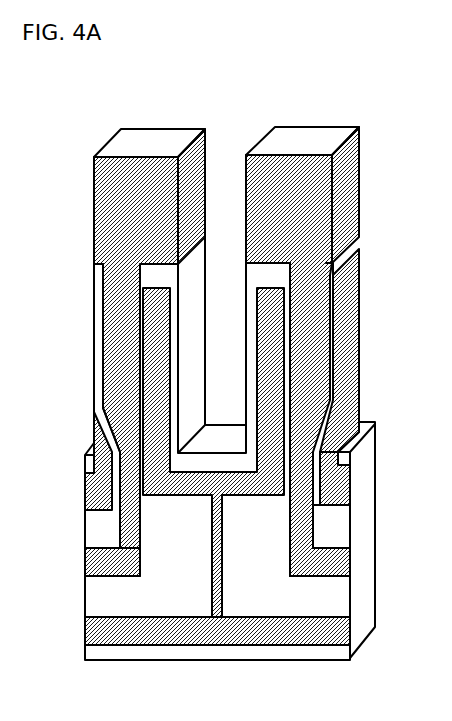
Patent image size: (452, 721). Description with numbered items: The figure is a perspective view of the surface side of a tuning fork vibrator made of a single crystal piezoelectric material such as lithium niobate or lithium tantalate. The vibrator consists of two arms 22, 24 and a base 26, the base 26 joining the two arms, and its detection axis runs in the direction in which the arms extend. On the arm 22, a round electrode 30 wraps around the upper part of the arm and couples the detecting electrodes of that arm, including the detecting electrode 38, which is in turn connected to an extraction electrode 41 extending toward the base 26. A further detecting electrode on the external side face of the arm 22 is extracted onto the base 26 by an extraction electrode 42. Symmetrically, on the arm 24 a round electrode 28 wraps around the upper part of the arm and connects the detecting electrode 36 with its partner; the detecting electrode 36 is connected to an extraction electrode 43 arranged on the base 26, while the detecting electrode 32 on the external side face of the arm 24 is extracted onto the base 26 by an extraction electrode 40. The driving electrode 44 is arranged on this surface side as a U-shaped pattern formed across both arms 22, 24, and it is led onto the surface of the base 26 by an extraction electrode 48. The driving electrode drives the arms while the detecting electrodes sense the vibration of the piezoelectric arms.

The arm 22 is at (146, 141).
The arm 24 is at (299, 139).
The base 26 is at (86, 530).
The round electrode 28 is at (348, 178).
The round electrode 30 is at (103, 183).
The detecting electrode 32 is at (350, 343).
The detecting electrode 36 is at (310, 289).
The detecting electrode 38 is at (113, 291).
The extraction electrode 40 is at (343, 478).
The extraction electrode 41 is at (97, 565).
The extraction electrode 42 is at (95, 482).
The extraction electrode 43 is at (343, 560).
The driving electrode 44 is at (277, 423).
The extraction electrode 48 is at (222, 633).